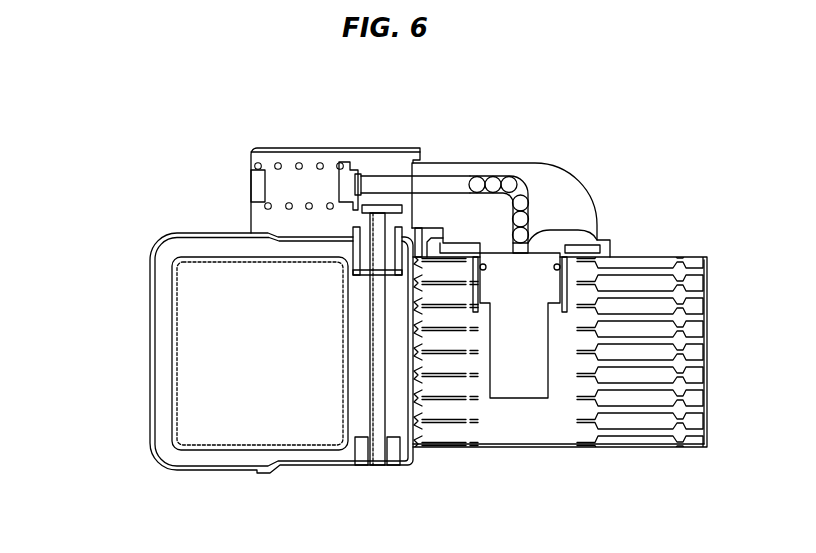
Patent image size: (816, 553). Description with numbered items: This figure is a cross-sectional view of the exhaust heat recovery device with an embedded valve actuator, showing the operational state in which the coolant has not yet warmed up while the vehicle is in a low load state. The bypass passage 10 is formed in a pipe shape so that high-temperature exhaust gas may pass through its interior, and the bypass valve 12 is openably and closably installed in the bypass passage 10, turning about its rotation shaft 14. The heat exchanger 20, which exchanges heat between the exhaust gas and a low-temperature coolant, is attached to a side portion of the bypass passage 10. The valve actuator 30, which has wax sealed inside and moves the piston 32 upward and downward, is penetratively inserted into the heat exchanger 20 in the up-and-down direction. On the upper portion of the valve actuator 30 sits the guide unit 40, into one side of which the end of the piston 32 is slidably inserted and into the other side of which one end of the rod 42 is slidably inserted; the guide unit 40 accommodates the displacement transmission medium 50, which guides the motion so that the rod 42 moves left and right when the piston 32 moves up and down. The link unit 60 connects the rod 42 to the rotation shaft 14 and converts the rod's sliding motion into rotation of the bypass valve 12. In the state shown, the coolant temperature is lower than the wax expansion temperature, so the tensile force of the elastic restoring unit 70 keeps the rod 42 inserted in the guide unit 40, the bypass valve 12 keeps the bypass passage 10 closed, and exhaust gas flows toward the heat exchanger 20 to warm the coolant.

The bypass passage 10 is at (153, 370).
The bypass valve 12 is at (228, 393).
The rotation shaft 14 is at (385, 410).
The heat exchanger 20 is at (657, 290).
The valve actuator 30 is at (521, 375).
The piston 32 is at (531, 243).
The guide unit 40 is at (560, 184).
The rod 42 is at (398, 186).
The displacement transmission medium 50 is at (492, 178).
The link unit 60 is at (372, 200).
The elastic restoring unit 70 is at (297, 150).